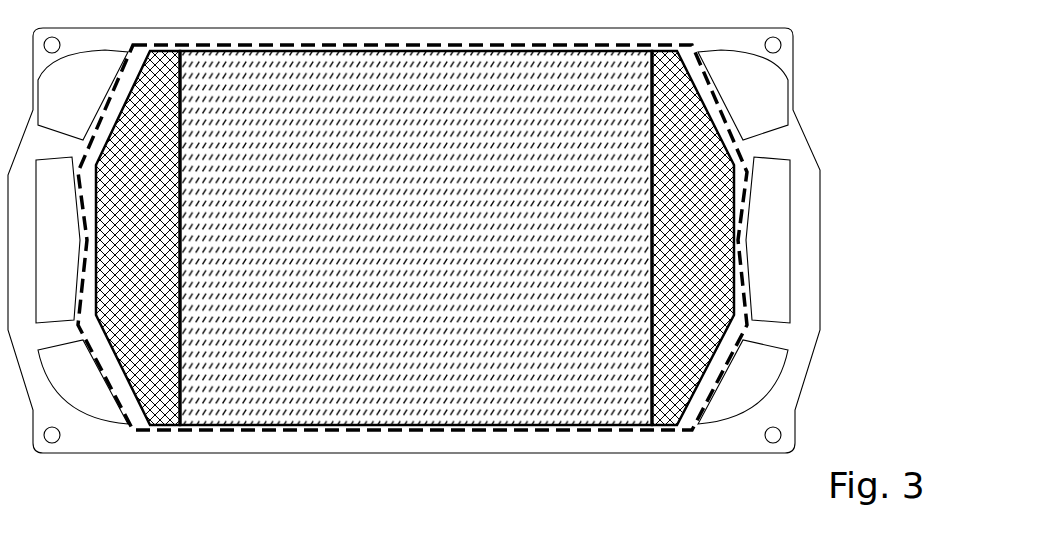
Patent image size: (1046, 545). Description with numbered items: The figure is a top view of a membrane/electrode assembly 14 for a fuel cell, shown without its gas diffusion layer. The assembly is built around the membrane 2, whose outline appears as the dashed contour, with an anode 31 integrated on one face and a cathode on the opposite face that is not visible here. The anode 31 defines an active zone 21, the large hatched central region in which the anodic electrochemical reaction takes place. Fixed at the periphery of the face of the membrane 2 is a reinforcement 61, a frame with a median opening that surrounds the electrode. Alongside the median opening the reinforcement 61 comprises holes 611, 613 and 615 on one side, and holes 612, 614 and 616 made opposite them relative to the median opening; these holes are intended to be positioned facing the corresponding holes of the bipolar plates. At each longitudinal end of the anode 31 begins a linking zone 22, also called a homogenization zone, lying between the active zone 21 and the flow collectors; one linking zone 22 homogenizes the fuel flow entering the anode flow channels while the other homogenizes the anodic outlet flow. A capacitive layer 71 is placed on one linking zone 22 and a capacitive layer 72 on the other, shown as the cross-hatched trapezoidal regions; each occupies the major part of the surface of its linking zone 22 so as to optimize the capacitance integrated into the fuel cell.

The membrane 2 is at (418, 438).
The membrane/electrode assembly 14 is at (850, 279).
The active zone 21 is at (263, 431).
The linking zone 22 is at (163, 426).
The anode 31 is at (428, 249).
The reinforcement 61 is at (802, 43).
The capacitive layer 71 is at (142, 251).
The capacitive layer 72 is at (712, 251).
The hole 611 is at (100, 101).
The hole 612 is at (767, 386).
The hole 613 is at (80, 249).
The hole 614 is at (786, 249).
The hole 615 is at (95, 384).
The hole 616 is at (758, 102).